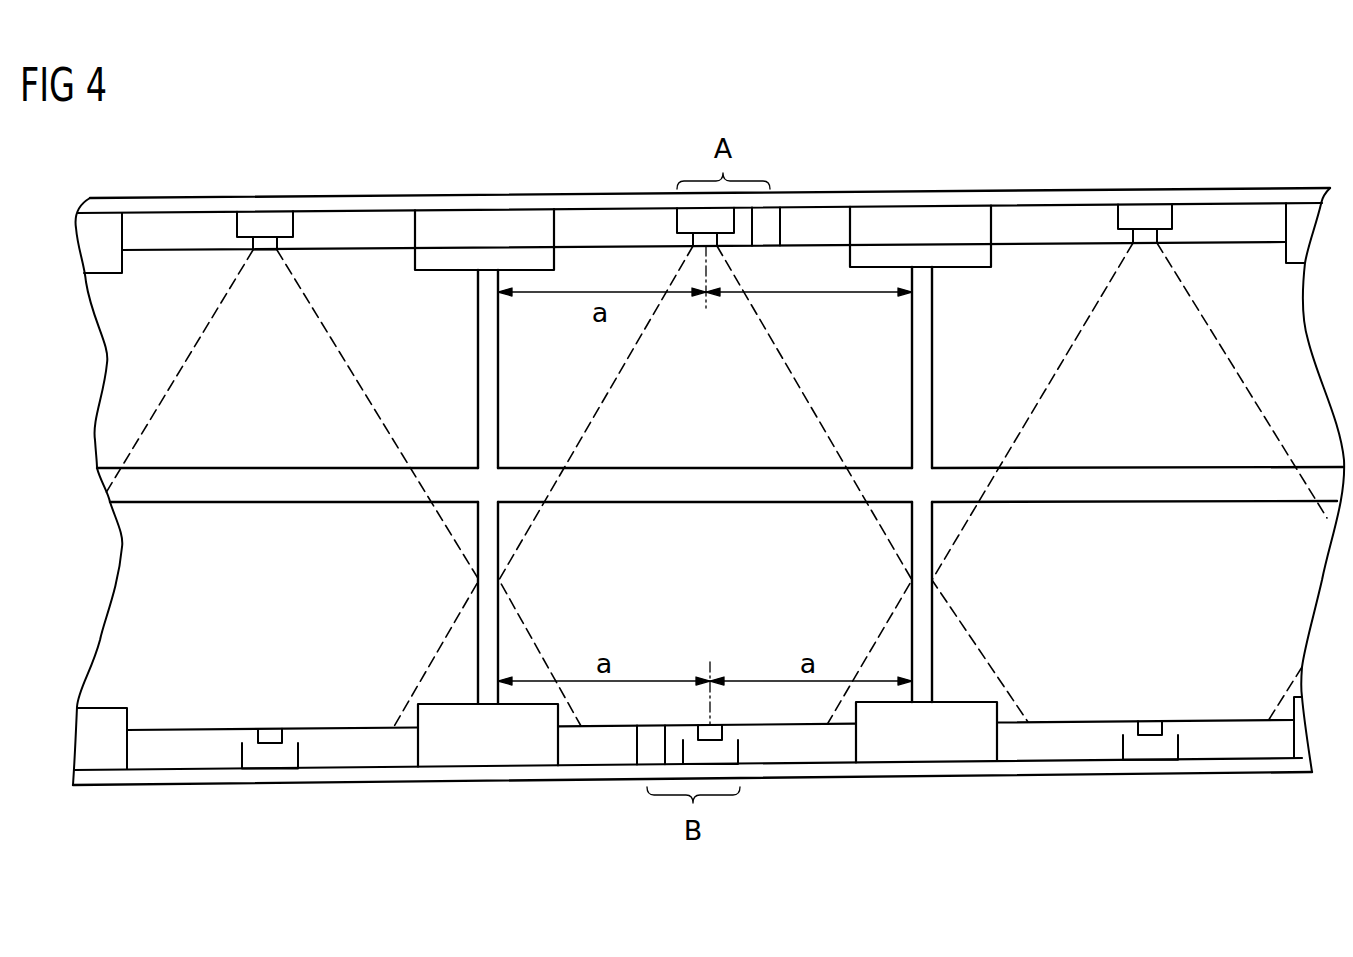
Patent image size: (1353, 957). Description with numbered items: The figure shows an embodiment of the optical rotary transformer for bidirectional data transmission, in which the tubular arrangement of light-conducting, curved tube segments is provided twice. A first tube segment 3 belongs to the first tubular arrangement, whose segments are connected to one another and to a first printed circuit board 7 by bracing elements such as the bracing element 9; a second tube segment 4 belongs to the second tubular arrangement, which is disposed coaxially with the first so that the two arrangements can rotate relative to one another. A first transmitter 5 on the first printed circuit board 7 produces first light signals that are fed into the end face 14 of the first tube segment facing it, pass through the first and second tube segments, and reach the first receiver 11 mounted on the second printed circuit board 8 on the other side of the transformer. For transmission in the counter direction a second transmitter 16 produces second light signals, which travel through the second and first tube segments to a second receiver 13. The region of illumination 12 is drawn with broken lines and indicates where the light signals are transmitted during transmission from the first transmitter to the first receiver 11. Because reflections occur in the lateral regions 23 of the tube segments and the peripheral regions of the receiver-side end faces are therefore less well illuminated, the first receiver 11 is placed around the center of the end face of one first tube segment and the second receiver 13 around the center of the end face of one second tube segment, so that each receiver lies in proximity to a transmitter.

The first tube segment 3 is at (632, 265).
The second tube segment 4 is at (568, 712).
The first transmitter 5 is at (681, 222).
The first printed circuit board 7 is at (1248, 195).
The second printed circuit board 8 is at (1252, 770).
The bracing element 9 is at (482, 225).
The first receiver 11 is at (646, 750).
The region of illumination 12 is at (810, 703).
The second receiver 13 is at (768, 222).
The end face 14 is at (580, 240).
The second transmitter 16 is at (735, 750).
The lateral region 23 is at (499, 688).